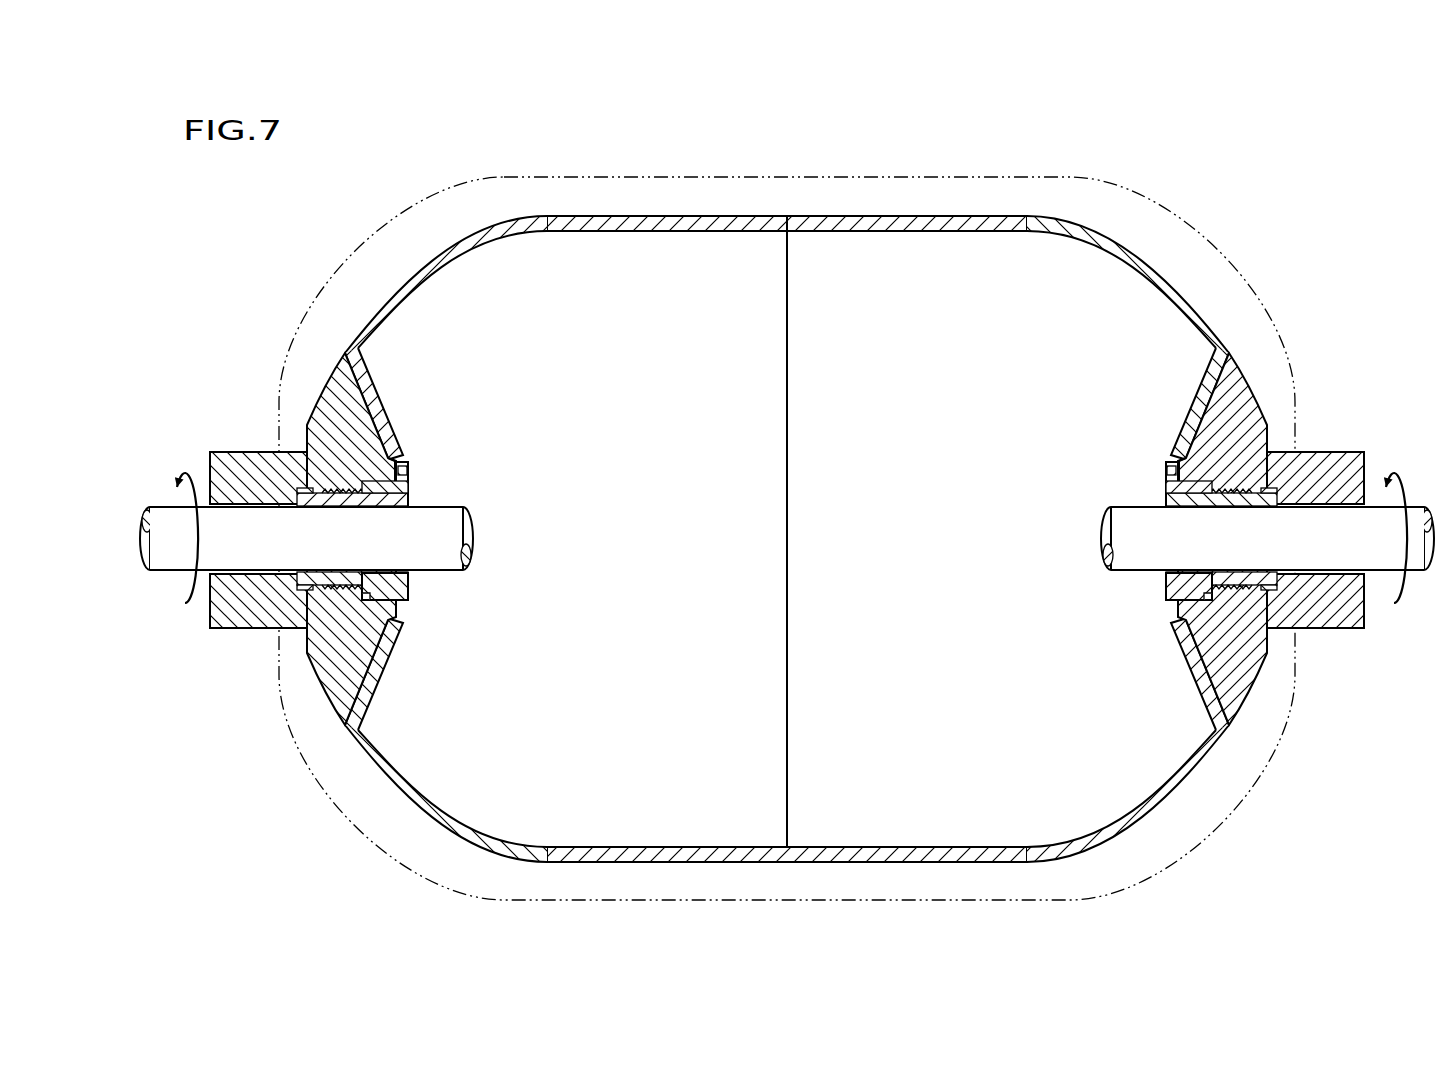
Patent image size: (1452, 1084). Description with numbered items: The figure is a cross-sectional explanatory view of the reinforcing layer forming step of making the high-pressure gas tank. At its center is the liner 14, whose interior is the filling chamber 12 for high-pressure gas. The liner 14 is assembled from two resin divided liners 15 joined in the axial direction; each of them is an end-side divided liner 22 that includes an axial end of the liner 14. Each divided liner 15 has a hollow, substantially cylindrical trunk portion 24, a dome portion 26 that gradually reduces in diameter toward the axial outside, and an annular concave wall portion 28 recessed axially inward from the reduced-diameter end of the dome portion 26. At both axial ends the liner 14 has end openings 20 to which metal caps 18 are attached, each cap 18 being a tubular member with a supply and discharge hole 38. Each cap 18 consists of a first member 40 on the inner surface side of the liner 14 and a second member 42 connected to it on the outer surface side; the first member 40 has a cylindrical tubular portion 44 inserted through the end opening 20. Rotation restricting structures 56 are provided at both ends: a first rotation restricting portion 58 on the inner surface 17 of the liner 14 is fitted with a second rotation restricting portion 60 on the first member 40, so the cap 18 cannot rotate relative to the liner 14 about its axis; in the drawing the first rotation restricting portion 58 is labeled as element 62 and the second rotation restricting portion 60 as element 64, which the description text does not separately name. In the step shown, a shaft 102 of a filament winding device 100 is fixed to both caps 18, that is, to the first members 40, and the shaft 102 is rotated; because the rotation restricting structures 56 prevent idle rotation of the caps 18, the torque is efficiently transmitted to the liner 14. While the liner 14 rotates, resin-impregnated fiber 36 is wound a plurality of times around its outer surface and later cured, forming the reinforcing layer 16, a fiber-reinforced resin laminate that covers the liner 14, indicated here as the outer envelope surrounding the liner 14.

The filling chamber 12 is at (787, 478).
The liner 14 is at (787, 162).
The divided liner 15 is at (787, 181).
The end-side divided liner 22 is at (888, 122).
The reinforcing layer 16 is at (787, 507).
The fiber 36 is at (447, 187).
The trunk portion 24 is at (787, 478).
The dome portion 26 is at (422, 280).
The annular concave wall portion 28 is at (388, 399).
The inner surface 17 is at (407, 463).
The cap 18 is at (203, 614).
The end opening 20 is at (367, 506).
The supply and discharge hole 38 is at (240, 502).
The first member 40 is at (410, 586).
The second member 42 is at (232, 628).
The cylindrical tubular portion 44 is at (303, 506).
The rotation restricting structure 56 is at (787, 498).
The O-ring 62 is at (787, 457).
The first rotation restricting portion 58 is at (403, 476).
The backup ring 64 is at (787, 486).
The second rotation restricting portion 60 is at (408, 487).
The filament winding device 100 is at (181, 461).
The shaft 102 is at (160, 505).